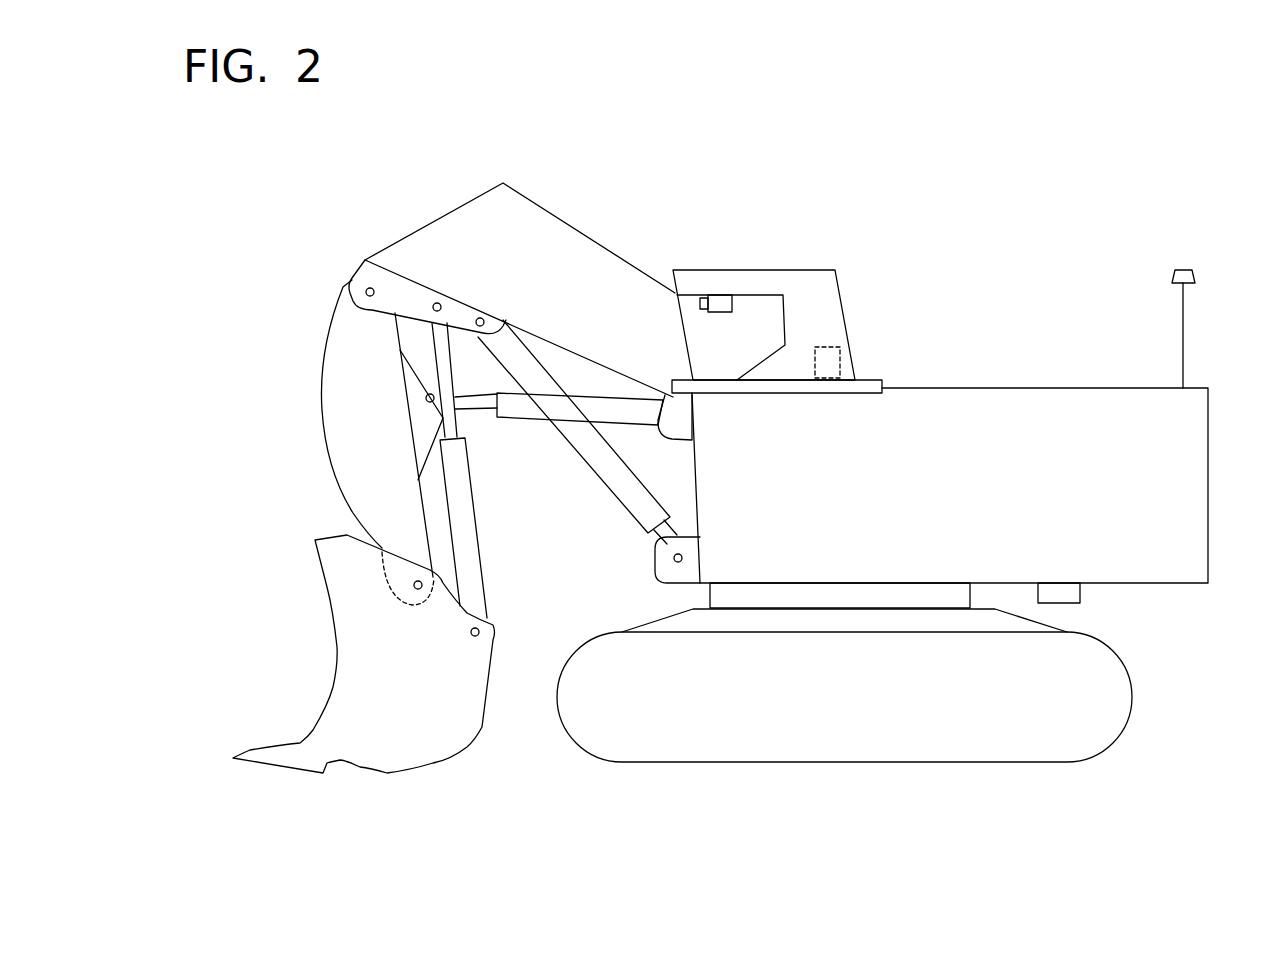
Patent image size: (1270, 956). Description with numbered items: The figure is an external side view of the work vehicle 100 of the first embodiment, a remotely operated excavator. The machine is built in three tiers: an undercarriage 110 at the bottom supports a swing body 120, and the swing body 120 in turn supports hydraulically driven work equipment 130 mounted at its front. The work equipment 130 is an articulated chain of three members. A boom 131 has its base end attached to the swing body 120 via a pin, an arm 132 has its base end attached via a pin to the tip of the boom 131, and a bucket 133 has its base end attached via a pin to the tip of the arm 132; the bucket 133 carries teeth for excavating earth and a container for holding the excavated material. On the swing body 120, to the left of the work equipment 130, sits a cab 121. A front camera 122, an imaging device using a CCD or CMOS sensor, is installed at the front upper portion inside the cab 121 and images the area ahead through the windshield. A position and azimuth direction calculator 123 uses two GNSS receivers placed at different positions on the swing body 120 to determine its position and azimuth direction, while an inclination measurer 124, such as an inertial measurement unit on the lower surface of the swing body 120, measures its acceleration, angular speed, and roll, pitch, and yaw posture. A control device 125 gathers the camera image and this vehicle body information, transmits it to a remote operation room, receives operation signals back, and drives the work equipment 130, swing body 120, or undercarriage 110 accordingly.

The work vehicle 100 is at (1070, 188).
The undercarriage 110 is at (838, 765).
The swing body 120 is at (1080, 388).
The cab 121 is at (788, 270).
The front camera 122 is at (718, 298).
The position and azimuth direction calculator 123 is at (1185, 270).
The inclination measurer 124 is at (1080, 595).
The control device 125 is at (828, 347).
The work equipment 130 is at (645, 228).
The boom 131 is at (526, 195).
The arm 132 is at (327, 363).
The bucket 133 is at (407, 773).